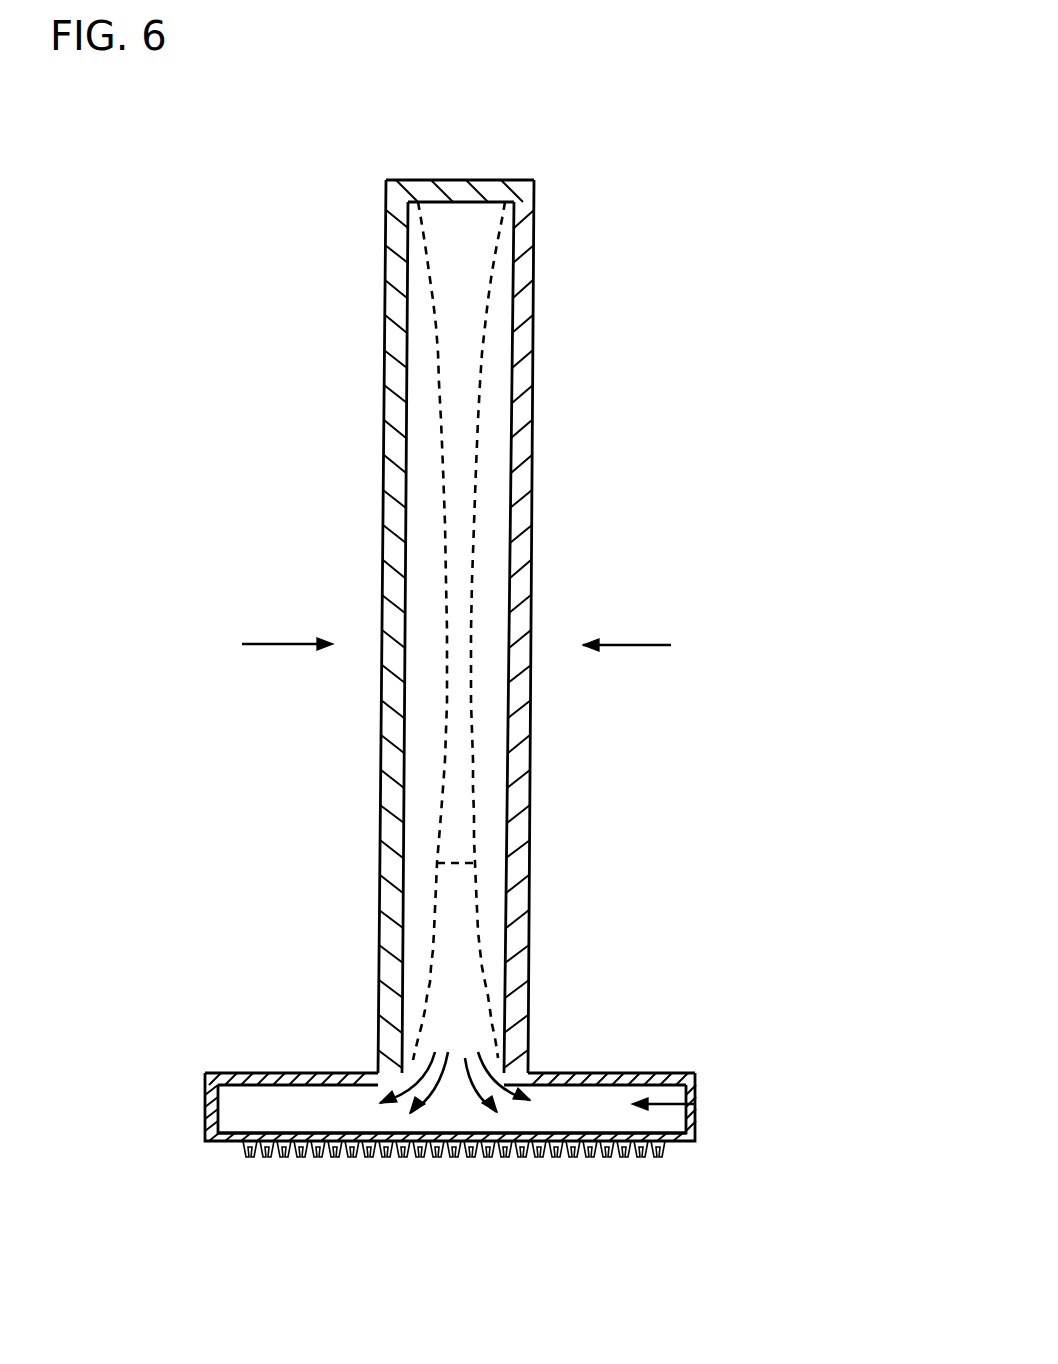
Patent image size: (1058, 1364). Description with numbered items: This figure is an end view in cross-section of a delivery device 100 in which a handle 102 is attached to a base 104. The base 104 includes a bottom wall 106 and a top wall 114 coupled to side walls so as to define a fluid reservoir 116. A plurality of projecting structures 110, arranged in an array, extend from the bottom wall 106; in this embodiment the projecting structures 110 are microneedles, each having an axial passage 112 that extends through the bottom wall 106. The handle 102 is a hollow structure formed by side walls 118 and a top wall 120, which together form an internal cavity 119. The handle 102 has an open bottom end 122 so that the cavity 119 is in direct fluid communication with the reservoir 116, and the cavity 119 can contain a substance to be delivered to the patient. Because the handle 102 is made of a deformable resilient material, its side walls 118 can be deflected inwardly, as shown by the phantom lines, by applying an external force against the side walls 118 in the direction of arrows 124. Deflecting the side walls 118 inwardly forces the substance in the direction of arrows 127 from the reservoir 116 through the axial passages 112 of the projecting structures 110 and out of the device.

The delivery device 100 is at (585, 270).
The handle 102 is at (540, 803).
The base 104 is at (710, 1070).
The bottom wall 106 is at (672, 1145).
The projecting structures 110 is at (308, 1163).
The axial passage 112 is at (252, 1140).
The top wall 114 is at (670, 1075).
The fluid reservoir 116 is at (695, 1104).
The side walls 118 is at (385, 430).
The internal cavity 119 is at (487, 873).
The top wall 120 is at (456, 180).
The open bottom end 122 is at (440, 1030).
The arrows 124 is at (273, 643).
The arrows 127 is at (447, 1062).